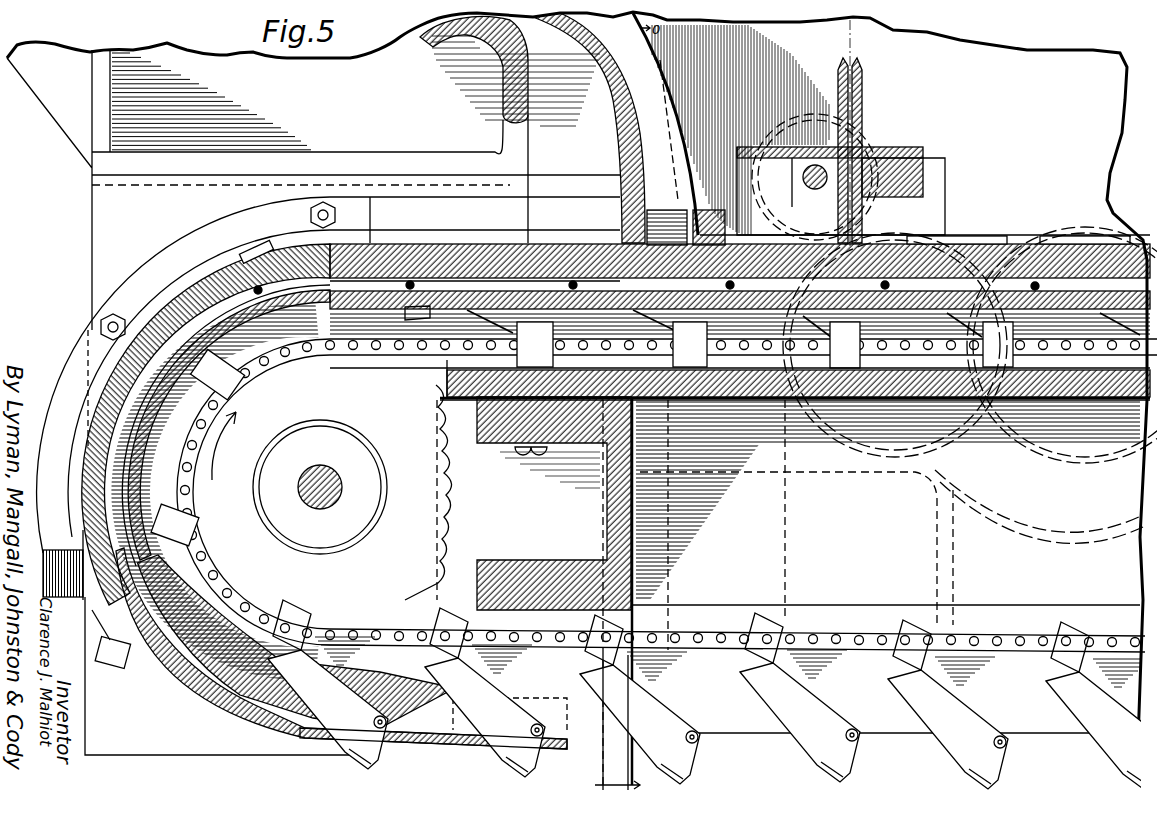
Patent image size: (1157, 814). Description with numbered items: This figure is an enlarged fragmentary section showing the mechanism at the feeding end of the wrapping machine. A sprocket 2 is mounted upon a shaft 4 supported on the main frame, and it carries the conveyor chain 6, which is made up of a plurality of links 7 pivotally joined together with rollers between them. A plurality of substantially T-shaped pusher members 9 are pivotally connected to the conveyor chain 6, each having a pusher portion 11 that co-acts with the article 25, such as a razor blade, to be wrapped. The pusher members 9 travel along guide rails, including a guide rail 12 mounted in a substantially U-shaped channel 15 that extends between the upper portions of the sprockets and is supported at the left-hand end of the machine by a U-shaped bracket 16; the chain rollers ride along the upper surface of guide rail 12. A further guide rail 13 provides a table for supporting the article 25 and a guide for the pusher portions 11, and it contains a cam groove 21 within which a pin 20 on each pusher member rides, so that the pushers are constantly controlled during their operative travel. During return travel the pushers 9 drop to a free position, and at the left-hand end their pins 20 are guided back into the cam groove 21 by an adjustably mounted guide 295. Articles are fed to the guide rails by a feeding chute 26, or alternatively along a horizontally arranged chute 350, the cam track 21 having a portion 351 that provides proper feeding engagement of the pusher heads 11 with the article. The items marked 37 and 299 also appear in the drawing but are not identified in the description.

The sprocket 2 is at (430, 492).
The shaft 4 is at (320, 510).
The conveyor chain 6 is at (679, 622).
The links 7 is at (570, 642).
The pusher members 9 is at (306, 318).
The pusher portion 11 is at (252, 247).
The guide rail 12 is at (779, 400).
The guide rail 13 is at (527, 250).
The U-shaped channel 15 is at (738, 400).
The U-shaped bracket 16 is at (606, 505).
The pin 20 is at (404, 310).
The cam groove 21 is at (606, 314).
The article 25 is at (662, 210).
The feeding chute 26 is at (595, 92).
The shaft 37 is at (852, 45).
The adjustably mounted guide 295 is at (470, 750).
The rail 299 is at (886, 669).
The horizontally arranged chute 350 is at (62, 548).
The cam track portion 351 is at (192, 500).